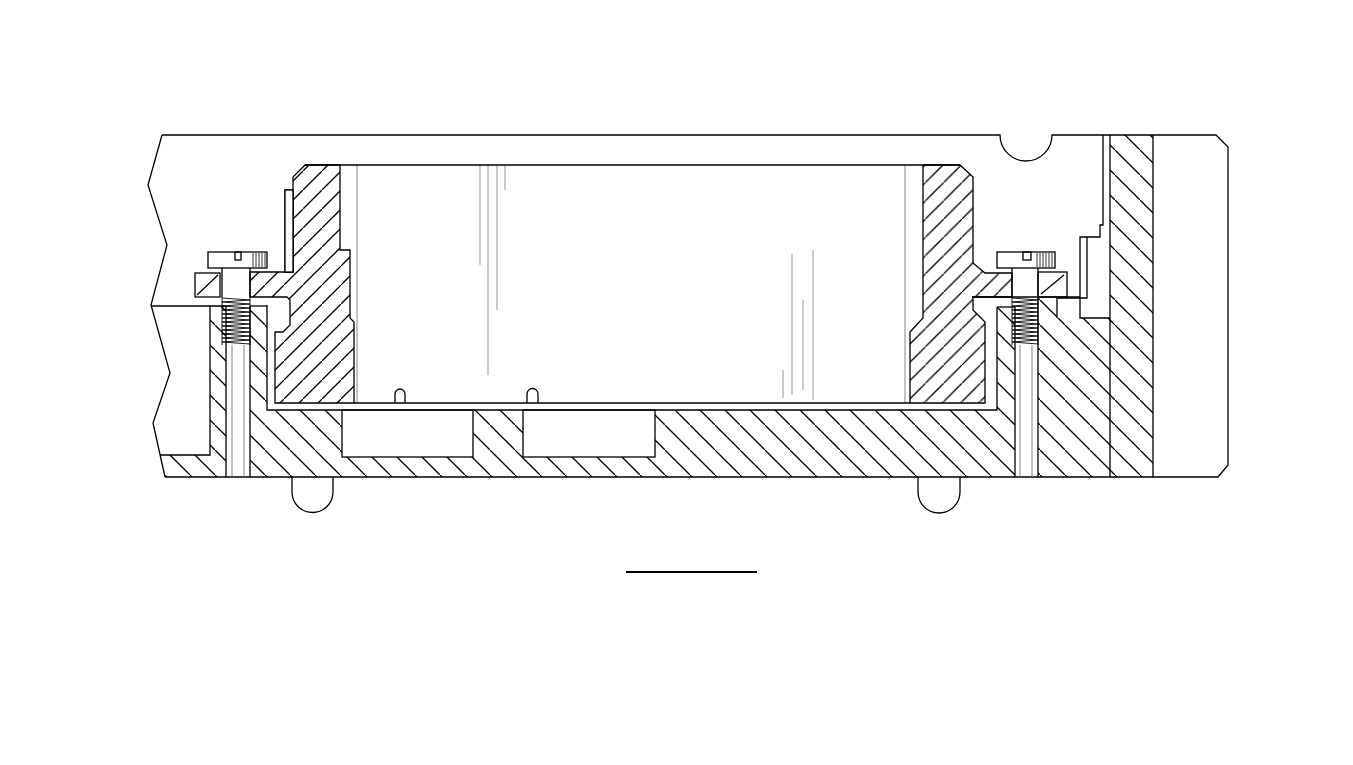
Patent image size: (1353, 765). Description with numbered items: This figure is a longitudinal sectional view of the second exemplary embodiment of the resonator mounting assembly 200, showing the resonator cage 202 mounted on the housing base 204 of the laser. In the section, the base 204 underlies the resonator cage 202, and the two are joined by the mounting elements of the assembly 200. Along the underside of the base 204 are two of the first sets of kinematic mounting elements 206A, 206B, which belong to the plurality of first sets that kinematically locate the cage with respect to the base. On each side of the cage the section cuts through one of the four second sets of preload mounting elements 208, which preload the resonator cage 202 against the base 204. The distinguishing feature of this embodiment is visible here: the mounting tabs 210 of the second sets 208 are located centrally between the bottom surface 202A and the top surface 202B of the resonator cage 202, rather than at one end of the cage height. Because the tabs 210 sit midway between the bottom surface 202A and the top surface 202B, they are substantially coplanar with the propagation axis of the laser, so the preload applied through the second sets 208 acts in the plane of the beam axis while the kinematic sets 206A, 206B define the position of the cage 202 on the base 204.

The resonator mounting assembly 200 is at (737, 100).
The resonator cage 202 is at (623, 139).
The bottom surface 202A is at (597, 403).
The top surface 202B is at (488, 145).
The base 204 is at (1231, 403).
The first set of kinematic mounting elements 206A is at (262, 508).
The first set of kinematic mounting elements 206B is at (988, 510).
The second set of preload mounting elements 208 is at (176, 232).
The mounting tab 210 is at (198, 281).